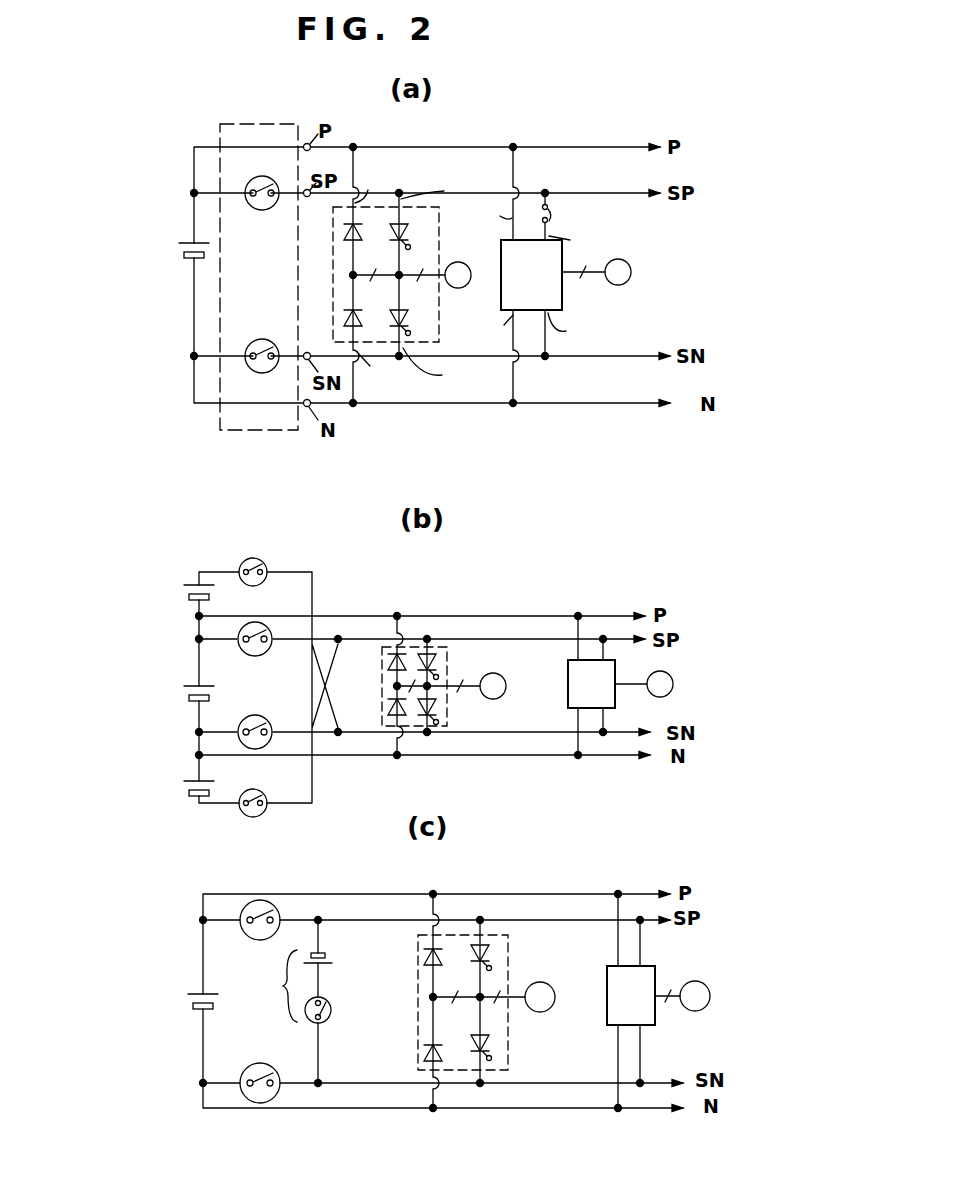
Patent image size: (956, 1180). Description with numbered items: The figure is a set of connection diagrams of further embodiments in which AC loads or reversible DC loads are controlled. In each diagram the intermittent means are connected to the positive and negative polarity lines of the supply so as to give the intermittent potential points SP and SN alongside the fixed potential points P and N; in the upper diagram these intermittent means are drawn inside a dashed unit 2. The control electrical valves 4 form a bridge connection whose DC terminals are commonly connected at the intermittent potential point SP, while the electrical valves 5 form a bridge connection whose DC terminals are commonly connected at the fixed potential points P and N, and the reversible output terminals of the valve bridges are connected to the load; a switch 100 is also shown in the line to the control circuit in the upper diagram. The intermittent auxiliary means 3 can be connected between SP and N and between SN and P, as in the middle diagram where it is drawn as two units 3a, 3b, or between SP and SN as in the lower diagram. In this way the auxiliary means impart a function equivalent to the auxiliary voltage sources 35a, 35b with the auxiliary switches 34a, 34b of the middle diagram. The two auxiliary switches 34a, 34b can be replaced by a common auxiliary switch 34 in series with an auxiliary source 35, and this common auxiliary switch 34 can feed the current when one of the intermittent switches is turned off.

The switch unit 2 is at (221, 270).
The intermittent auxiliary means 3 is at (269, 999).
The auxiliary power unit 3a is at (244, 788).
The auxiliary power unit 3b is at (244, 613).
The control electrical valves 4 is at (406, 240).
The electrical valves 5 is at (342, 241).
The common auxiliary switch 34 is at (332, 1000).
The auxiliary switch 34a is at (262, 560).
The auxiliary switch 34b is at (248, 817).
The auxiliary battery 35 is at (331, 958).
The auxiliary voltage source 35a is at (187, 589).
The auxiliary voltage source 35b is at (187, 787).
The switch 100 is at (551, 213).